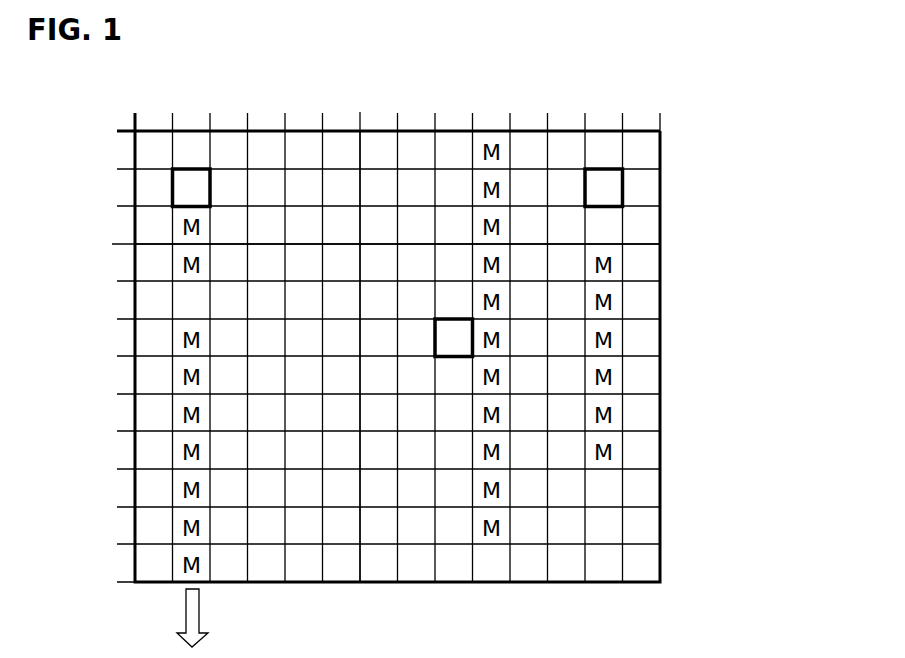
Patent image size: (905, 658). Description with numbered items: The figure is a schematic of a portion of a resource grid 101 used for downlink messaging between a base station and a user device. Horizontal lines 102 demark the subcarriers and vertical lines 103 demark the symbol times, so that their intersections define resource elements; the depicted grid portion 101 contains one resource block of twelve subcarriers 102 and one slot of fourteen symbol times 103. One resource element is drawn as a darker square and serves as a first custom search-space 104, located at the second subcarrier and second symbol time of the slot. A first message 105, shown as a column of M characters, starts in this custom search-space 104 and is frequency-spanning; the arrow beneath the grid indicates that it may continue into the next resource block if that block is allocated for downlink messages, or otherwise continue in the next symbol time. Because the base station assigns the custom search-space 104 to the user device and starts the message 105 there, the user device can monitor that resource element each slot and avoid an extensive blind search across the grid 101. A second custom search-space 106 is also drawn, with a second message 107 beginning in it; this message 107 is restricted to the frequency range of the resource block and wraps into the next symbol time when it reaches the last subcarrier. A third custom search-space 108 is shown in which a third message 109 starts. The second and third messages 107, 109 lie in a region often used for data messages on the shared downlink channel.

The resource grid 101 is at (661, 332).
The horizontal lines 102 is at (112, 244).
The vertical lines 103 is at (360, 112).
The first custom search-space 104 is at (193, 170).
The first message 105 is at (175, 339).
The second custom search-space 106 is at (459, 313).
The second message 107 is at (443, 452).
The third custom search-space 108 is at (604, 170).
The third message 109 is at (615, 224).